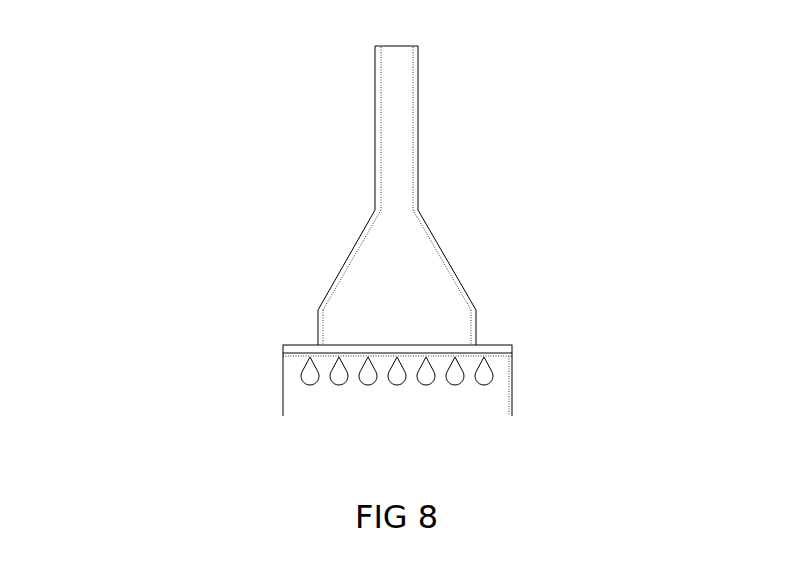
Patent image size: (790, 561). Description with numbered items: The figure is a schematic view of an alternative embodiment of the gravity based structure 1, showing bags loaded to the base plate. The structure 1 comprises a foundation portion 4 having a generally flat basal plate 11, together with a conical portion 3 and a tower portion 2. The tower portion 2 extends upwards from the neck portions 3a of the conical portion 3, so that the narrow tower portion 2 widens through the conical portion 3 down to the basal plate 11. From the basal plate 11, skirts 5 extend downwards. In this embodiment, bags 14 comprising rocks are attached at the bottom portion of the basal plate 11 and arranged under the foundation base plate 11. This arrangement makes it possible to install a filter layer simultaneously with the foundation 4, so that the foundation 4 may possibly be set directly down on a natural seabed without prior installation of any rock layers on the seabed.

The gravity based structure 1 is at (238, 195).
The tower portion 2 is at (402, 90).
The conical portion 3 is at (437, 283).
The neck portions 3a is at (377, 210).
The foundation portion 4 is at (315, 330).
The skirts 5 is at (283, 393).
The basal plate 11 is at (503, 349).
The bags 14 is at (484, 380).